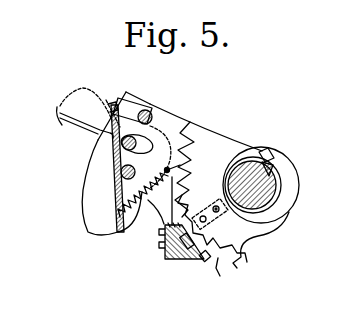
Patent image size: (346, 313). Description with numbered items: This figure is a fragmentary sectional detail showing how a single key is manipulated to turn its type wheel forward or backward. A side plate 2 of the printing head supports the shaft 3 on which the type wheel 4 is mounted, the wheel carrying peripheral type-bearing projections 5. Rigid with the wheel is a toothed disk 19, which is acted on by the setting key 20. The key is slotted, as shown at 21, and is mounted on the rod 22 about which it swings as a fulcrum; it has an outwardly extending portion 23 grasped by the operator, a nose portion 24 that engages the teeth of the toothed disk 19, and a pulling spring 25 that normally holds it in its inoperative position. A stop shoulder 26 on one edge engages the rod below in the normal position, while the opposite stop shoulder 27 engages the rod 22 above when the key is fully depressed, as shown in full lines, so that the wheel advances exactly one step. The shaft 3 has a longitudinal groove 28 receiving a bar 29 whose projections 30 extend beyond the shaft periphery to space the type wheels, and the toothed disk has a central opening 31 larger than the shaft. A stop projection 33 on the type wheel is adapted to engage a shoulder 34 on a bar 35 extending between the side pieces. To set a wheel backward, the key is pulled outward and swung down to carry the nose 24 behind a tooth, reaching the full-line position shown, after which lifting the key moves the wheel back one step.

The side plate 2 is at (208, 128).
The shaft 3 is at (277, 182).
The type wheel 4 is at (206, 133).
The type-bearing projection 5 is at (230, 266).
The toothed disk 19 is at (214, 147).
The setting key 20 is at (124, 157).
The slot 21 is at (150, 148).
The rod 22 is at (146, 111).
The outwardly extending portion 23 is at (59, 114).
The nose portion 24 is at (176, 166).
The pulling spring 25 is at (113, 197).
The stop shoulder 26 is at (112, 187).
The stop shoulder 27 is at (178, 122).
The groove 28 is at (272, 166).
The bar 29 is at (269, 160).
The projection 30 is at (266, 152).
The central opening 31 is at (285, 214).
The stop projection 33 is at (186, 228).
The shoulder 34 is at (204, 264).
The bar 35 is at (180, 262).